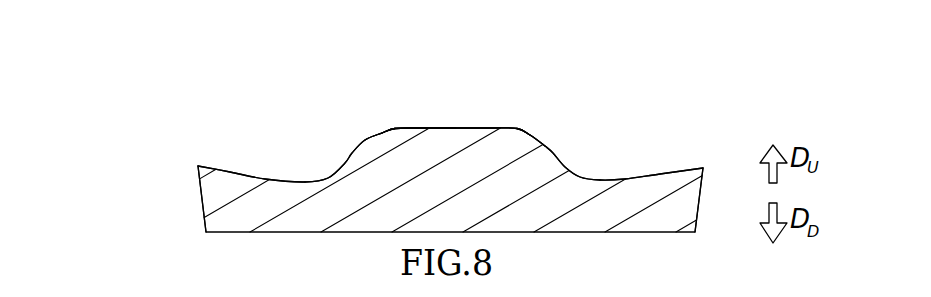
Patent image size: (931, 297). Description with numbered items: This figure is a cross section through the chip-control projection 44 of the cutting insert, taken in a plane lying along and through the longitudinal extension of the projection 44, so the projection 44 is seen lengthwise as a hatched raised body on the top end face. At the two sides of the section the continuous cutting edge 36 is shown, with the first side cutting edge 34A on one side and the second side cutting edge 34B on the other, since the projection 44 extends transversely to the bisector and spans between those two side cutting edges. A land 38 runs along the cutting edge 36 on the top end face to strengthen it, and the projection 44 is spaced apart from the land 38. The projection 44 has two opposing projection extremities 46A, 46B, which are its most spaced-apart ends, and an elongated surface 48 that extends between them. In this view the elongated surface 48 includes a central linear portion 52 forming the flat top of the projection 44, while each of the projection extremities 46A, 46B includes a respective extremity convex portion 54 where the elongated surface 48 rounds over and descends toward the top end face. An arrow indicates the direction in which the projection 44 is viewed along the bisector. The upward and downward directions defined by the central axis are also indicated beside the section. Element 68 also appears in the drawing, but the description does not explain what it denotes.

The first side cutting edge 34A is at (705, 167).
The second side cutting edge 34B is at (198, 167).
The continuous cutting edge 36 is at (450, 180).
The land 38 is at (210, 166).
The projection 44 is at (465, 104).
The projection extremity 46A is at (552, 153).
The projection extremity 46B is at (353, 155).
The elongated surface 48 is at (477, 128).
The central linear portion 52 is at (430, 128).
The extremity convex portion 54 is at (377, 135).
The element 68 is at (474, 289).